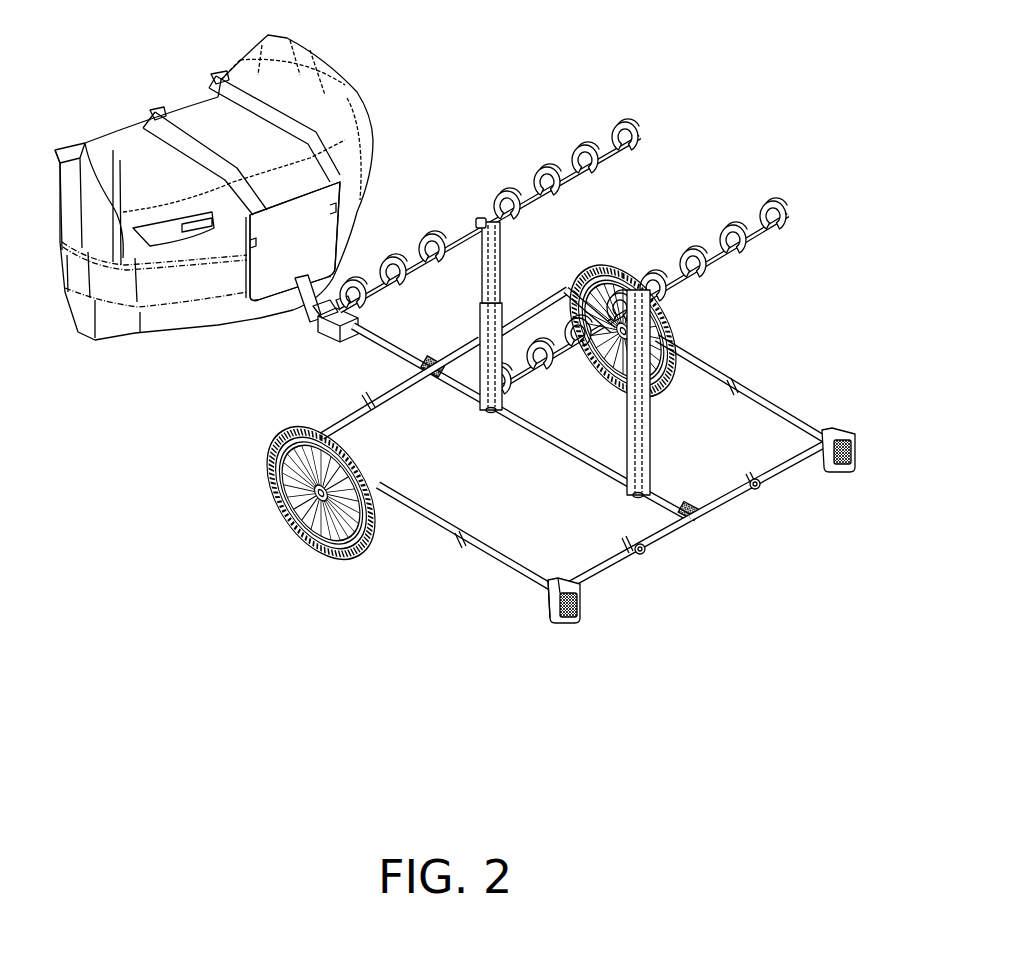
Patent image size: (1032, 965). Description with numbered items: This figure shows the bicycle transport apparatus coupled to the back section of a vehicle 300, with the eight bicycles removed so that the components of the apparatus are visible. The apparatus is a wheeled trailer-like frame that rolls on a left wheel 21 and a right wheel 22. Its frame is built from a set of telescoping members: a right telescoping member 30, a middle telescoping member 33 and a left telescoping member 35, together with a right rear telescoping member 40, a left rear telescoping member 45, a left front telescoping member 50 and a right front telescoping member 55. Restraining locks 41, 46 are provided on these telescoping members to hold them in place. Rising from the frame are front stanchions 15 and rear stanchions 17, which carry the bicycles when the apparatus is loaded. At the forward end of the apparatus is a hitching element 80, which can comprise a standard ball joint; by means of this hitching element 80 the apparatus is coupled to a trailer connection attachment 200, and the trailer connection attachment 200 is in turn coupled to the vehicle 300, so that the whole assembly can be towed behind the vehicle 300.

The front stanchions 15 is at (614, 122).
The rear stanchions 17 is at (758, 200).
The left wheel 21 is at (362, 555).
The right wheel 22 is at (672, 323).
The right telescoping member 30 is at (773, 397).
The middle telescoping member 33 is at (667, 490).
The left telescoping member 35 is at (477, 530).
The right rear telescoping member 40 is at (780, 473).
The restraining lock 41 is at (755, 502).
The left rear telescoping member 45 is at (608, 567).
The restraining lock 46 is at (642, 553).
The left front telescoping member 50 is at (332, 413).
The right front telescoping member 55 is at (526, 312).
The hitching element 80 is at (315, 330).
The trailer connection attachment 200 is at (322, 243).
The vehicle 300 is at (157, 175).